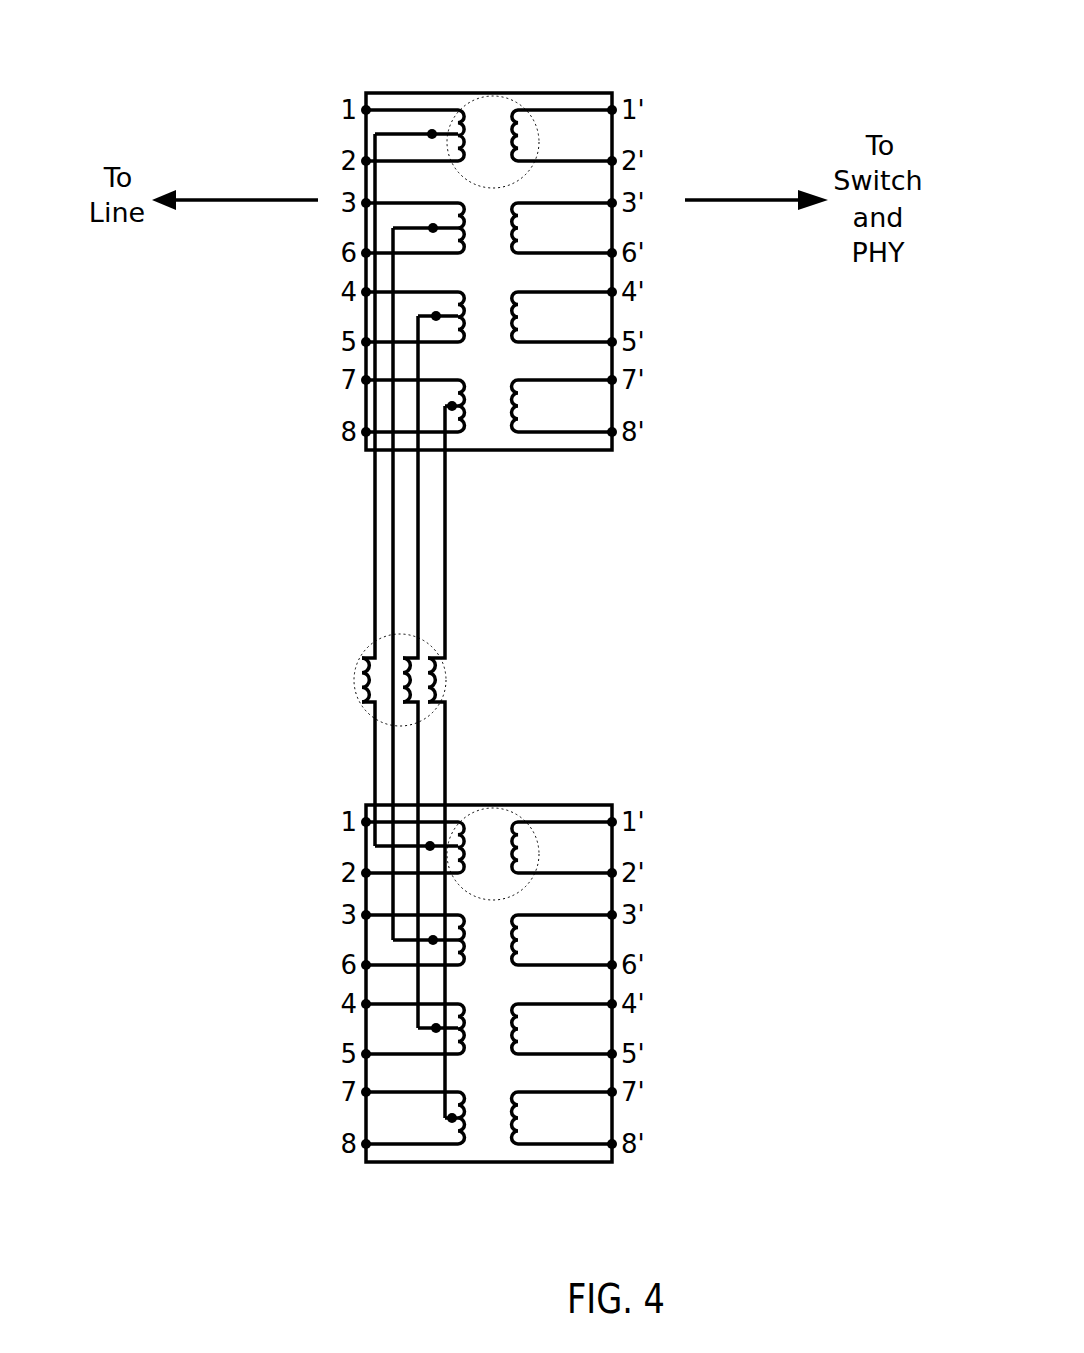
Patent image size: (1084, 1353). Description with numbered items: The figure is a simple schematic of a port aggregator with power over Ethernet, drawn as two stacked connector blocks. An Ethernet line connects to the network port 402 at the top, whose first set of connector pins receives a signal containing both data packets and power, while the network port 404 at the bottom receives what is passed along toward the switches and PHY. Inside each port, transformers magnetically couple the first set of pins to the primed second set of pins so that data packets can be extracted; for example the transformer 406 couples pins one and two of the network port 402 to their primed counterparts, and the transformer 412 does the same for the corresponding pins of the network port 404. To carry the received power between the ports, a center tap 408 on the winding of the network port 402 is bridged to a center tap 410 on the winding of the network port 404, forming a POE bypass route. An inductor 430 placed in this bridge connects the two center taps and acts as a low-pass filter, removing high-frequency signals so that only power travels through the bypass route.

The network port 402 is at (394, 93).
The network port 404 is at (612, 805).
The transformer 406 is at (530, 93).
The center tap 408 is at (432, 134).
The center tap 410 is at (428, 843).
The transformer 412 is at (528, 805).
The inductor 430 is at (372, 650).